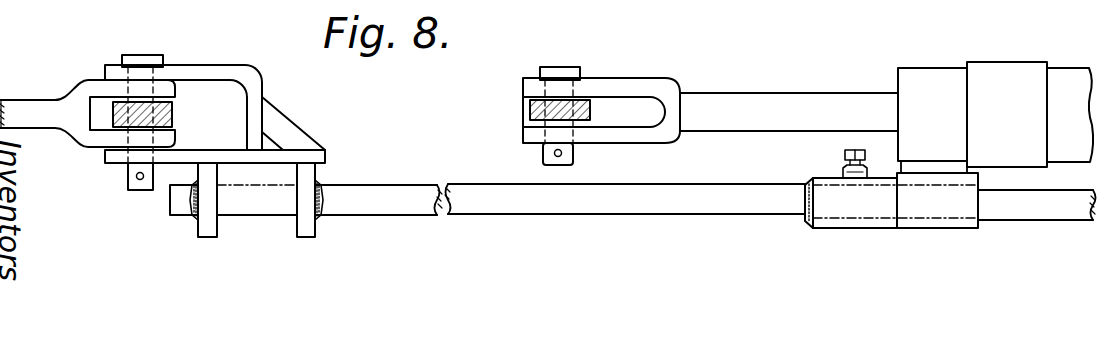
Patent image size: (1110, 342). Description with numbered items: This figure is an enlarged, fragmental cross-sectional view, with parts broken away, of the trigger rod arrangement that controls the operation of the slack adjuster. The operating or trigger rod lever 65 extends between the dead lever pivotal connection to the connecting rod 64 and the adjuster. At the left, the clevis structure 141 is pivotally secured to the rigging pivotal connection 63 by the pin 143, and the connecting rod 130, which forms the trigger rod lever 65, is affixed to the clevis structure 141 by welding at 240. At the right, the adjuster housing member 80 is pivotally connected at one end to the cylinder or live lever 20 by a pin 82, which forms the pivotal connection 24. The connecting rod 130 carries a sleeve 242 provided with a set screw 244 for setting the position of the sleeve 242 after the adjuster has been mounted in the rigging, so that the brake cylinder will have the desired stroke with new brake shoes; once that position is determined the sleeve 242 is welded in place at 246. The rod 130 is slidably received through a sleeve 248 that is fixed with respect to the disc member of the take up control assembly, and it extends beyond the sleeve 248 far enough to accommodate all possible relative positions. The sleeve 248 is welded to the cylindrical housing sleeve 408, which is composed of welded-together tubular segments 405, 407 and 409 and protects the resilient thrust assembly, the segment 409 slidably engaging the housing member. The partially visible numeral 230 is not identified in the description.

The cylinder or live lever 20 is at (590, 117).
The pivotal connection 24 is at (600, 70).
The rigging pivotal connection 63 is at (137, 50).
The connecting rod 64 is at (27, 108).
The trigger rod lever 65 is at (412, 237).
The housing member 80 is at (768, 105).
The pin 82 is at (562, 66).
The connecting rod 130 is at (548, 203).
The clevis structure 141 is at (302, 112).
The pin 143 is at (153, 58).
The assembly 230 is at (539, 4).
The welding 240 is at (322, 177).
The sleeve 242 is at (863, 229).
The set screw 244 is at (845, 152).
The weld 246 is at (808, 226).
The sleeve 248 is at (960, 228).
The tubular segment 405 is at (920, 87).
The tubular segment 407 is at (997, 70).
The cylindrical housing sleeve 408 is at (953, 67).
The tubular segment 409 is at (1060, 80).